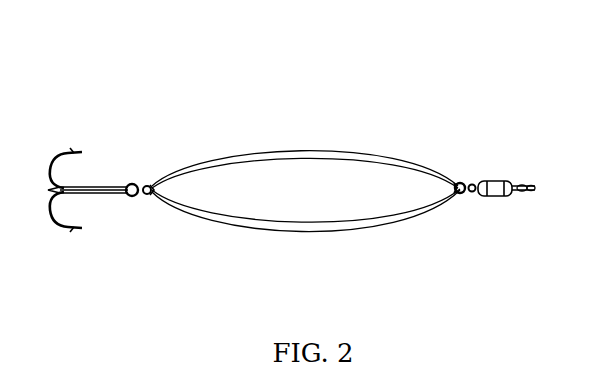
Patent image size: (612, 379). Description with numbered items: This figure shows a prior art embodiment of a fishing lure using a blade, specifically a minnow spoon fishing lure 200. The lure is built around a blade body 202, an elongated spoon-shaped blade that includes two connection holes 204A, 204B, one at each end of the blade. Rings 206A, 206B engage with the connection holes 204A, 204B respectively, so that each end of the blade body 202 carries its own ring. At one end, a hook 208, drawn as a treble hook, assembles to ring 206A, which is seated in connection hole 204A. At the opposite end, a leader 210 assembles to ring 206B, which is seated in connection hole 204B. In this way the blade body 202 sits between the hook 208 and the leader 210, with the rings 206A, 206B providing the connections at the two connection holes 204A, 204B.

The minnow spoon fishing lure 200 is at (203, 106).
The blade body 202 is at (307, 173).
The connection hole 204A is at (160, 180).
The connection hole 204B is at (458, 180).
The ring 206A is at (147, 192).
The ring 206B is at (465, 192).
The hook 208 is at (65, 152).
The leader 210 is at (502, 192).